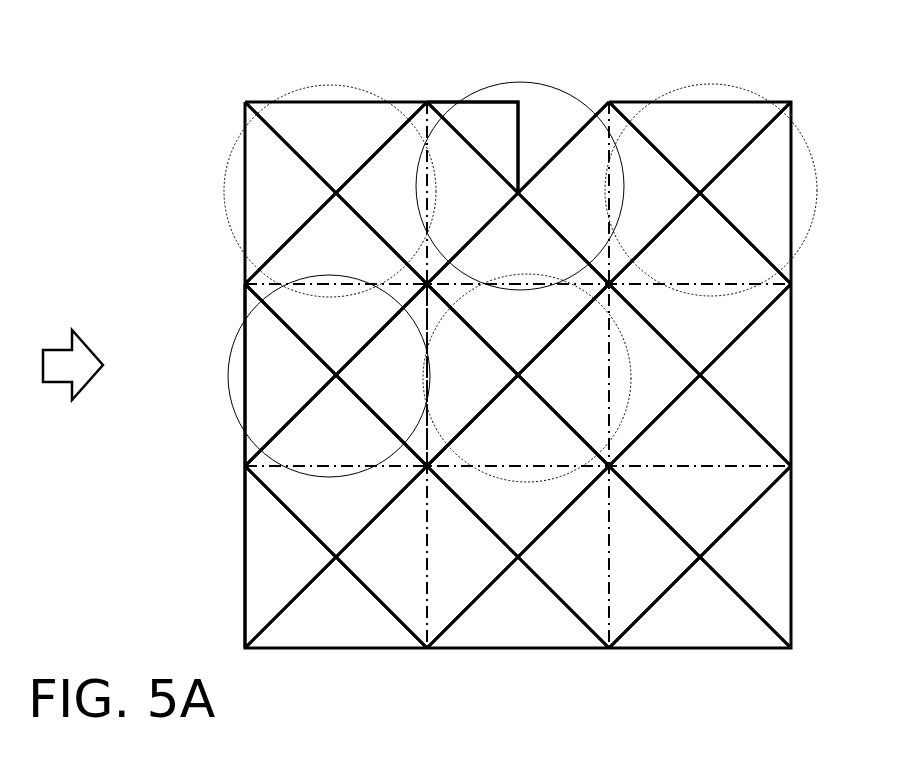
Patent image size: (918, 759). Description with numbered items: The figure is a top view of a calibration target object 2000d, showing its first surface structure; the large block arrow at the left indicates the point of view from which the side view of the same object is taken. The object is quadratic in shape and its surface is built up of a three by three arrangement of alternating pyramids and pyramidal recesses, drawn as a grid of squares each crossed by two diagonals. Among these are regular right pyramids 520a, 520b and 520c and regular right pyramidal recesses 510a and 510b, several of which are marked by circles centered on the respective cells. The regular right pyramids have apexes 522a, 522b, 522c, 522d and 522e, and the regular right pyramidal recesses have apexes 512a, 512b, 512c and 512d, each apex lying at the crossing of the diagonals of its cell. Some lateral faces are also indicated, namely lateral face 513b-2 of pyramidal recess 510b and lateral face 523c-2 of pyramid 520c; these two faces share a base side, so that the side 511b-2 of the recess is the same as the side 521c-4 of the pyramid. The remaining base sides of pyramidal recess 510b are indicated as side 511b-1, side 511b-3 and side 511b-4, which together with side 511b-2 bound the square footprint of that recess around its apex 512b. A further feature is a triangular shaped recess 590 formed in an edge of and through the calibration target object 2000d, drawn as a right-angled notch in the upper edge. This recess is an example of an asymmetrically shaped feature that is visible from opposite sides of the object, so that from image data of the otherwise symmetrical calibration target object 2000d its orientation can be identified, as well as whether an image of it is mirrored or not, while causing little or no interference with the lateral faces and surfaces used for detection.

The calibration target object 2000d is at (145, 72).
The triangular shaped recess 590 is at (545, 104).
The regular right pyramid 520a is at (340, 86).
The regular right pyramidal recess 510a is at (490, 88).
The regular right pyramid 520b is at (705, 86).
The regular right pyramidal recess 510b is at (236, 330).
The regular right pyramid 520c is at (630, 352).
The apex of regular right pyramid 522a is at (336, 190).
The apex of regular right pyramid 522b is at (701, 190).
The apex of regular right pyramidal recess 512a is at (518, 197).
The side of pyramidal recess 511b-1 is at (290, 284).
The apex of regular right pyramidal recess 512b is at (336, 375).
The lateral face of pyramidal recess 513b-2 is at (425, 387).
The lateral face of pyramid 523c-2 is at (503, 387).
The side of pyramidal recess 511b-4 is at (240, 375).
The side of pyramidal recess 511b-2 is at (425, 428).
The apex of regular right pyramid 522c is at (520, 390).
The apex of regular right pyramidal recess 512c is at (702, 390).
The side of pyramid 521c-4 is at (433, 458).
The side of pyramidal recess 511b-3 is at (249, 468).
The apex of regular right pyramid 522d is at (336, 570).
The apex of regular right pyramidal recess 512d is at (518, 565).
The apex of regular right pyramid 522e is at (702, 565).